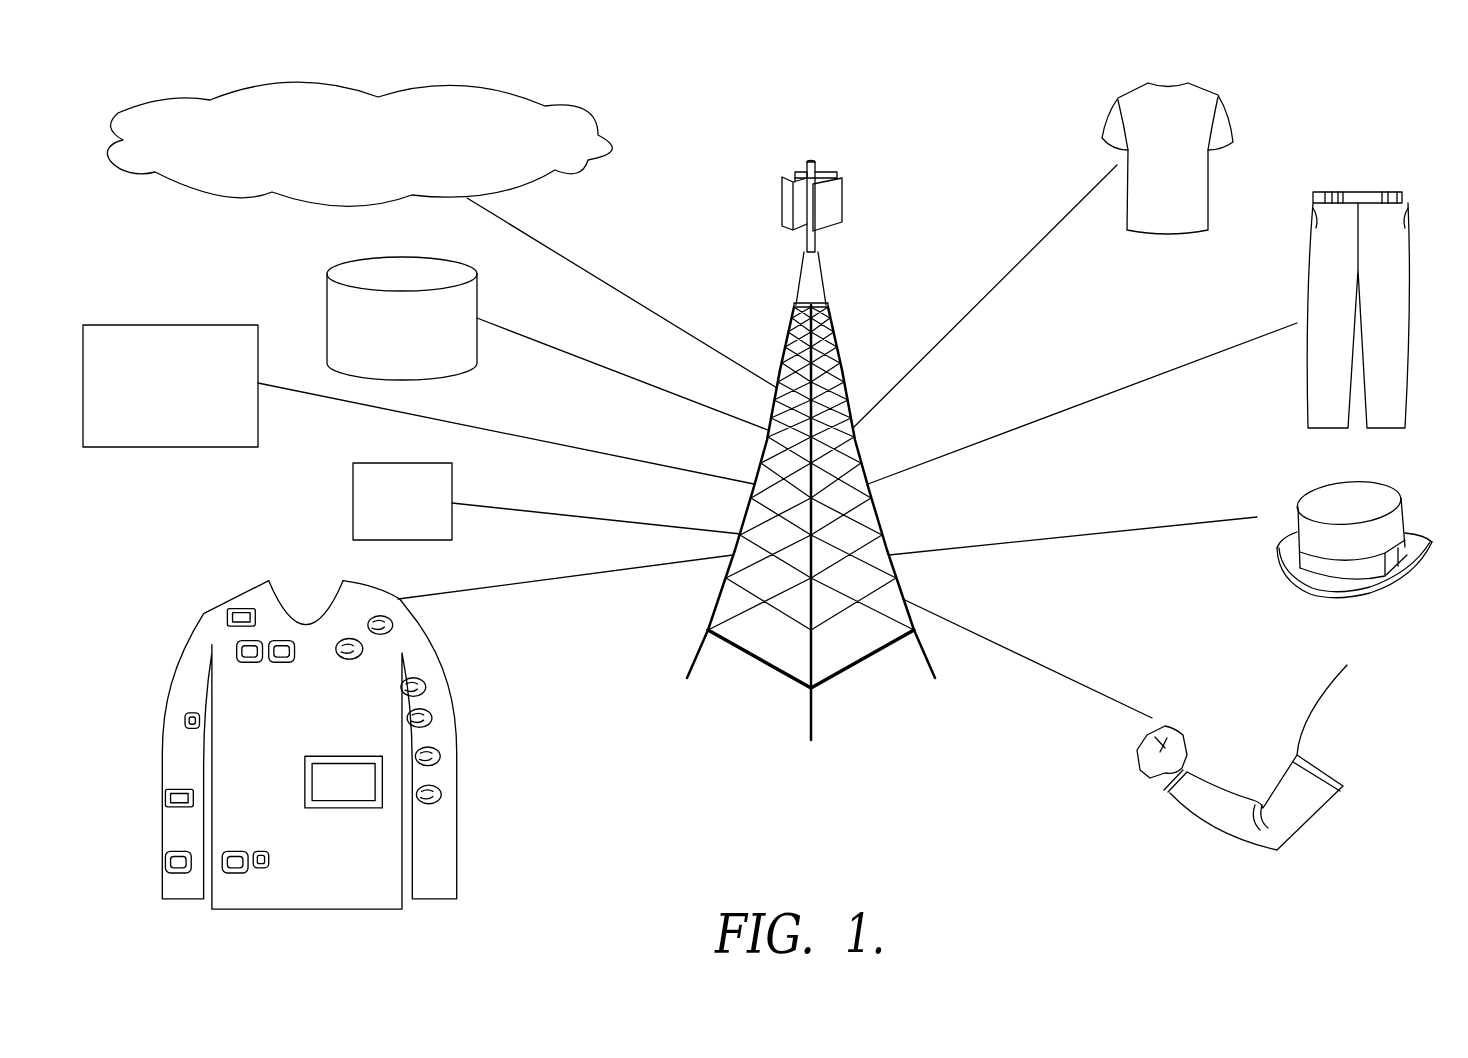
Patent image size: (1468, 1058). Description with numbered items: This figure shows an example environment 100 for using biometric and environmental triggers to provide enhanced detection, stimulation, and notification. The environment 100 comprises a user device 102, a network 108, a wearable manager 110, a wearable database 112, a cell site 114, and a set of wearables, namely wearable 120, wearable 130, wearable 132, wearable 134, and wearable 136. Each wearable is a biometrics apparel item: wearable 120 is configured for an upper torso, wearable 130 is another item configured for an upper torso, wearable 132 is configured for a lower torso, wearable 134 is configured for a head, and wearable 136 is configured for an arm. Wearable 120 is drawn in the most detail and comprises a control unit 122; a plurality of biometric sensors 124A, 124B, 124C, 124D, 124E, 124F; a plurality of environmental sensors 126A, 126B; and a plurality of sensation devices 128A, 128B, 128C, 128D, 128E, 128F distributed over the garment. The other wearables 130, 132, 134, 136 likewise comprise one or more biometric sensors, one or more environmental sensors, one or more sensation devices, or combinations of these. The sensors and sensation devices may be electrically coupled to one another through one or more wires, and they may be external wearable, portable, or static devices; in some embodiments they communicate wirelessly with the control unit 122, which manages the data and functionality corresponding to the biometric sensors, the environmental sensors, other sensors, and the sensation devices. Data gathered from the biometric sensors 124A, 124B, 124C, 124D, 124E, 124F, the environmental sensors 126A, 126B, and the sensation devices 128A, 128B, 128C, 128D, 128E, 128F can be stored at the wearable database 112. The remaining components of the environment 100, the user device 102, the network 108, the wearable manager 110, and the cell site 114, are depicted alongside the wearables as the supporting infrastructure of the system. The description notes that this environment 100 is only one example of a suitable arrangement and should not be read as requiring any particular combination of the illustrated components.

The example environment 100 is at (1355, 112).
The user device 102 is at (387, 463).
The network 108 is at (452, 83).
The wearable manager 110 is at (148, 325).
The wearable database 112 is at (372, 257).
The cell site 114 is at (828, 145).
The wearable 120 is at (293, 582).
The control unit 122 is at (352, 786).
The biometric sensor 124A is at (228, 642).
The biometric sensor 124B is at (290, 655).
The biometric sensor 124C is at (183, 712).
The biometric sensor 124D is at (168, 863).
The biometric sensor 124E is at (235, 863).
The biometric sensor 124F is at (260, 858).
The environmental sensor 126A is at (233, 607).
The environmental sensor 126B is at (168, 782).
The sensation device 128A is at (383, 626).
The sensation device 128B is at (354, 650).
The sensation device 128C is at (415, 683).
The sensation device 128D is at (422, 713).
The sensation device 128E is at (430, 752).
The sensation device 128F is at (432, 787).
The wearable 130 is at (1180, 82).
The wearable 132 is at (1387, 192).
The wearable 134 is at (1392, 498).
The wearable 136 is at (1327, 807).